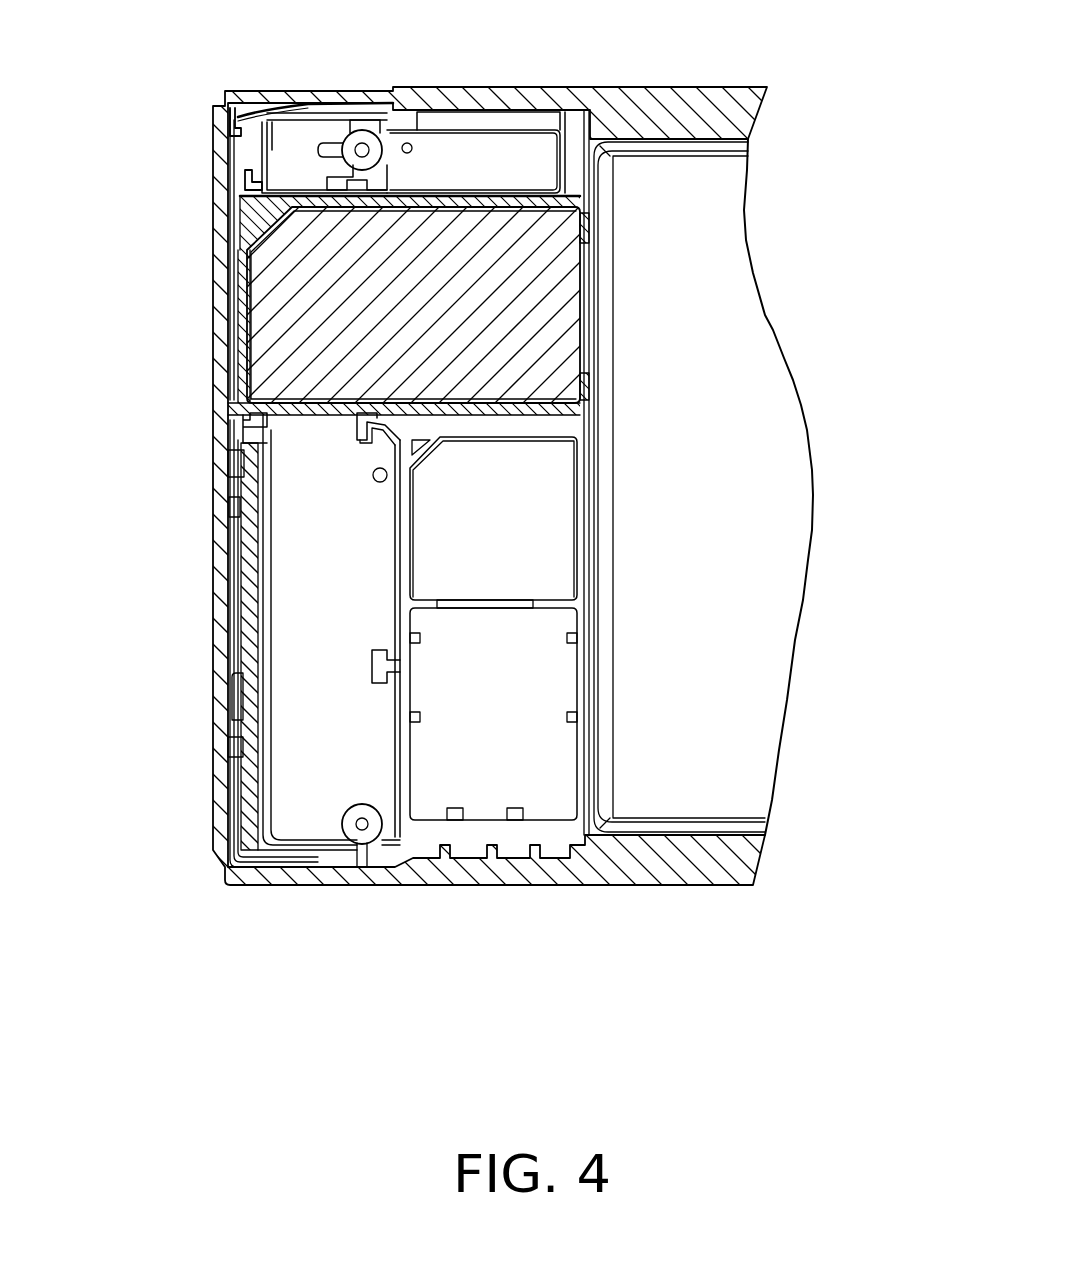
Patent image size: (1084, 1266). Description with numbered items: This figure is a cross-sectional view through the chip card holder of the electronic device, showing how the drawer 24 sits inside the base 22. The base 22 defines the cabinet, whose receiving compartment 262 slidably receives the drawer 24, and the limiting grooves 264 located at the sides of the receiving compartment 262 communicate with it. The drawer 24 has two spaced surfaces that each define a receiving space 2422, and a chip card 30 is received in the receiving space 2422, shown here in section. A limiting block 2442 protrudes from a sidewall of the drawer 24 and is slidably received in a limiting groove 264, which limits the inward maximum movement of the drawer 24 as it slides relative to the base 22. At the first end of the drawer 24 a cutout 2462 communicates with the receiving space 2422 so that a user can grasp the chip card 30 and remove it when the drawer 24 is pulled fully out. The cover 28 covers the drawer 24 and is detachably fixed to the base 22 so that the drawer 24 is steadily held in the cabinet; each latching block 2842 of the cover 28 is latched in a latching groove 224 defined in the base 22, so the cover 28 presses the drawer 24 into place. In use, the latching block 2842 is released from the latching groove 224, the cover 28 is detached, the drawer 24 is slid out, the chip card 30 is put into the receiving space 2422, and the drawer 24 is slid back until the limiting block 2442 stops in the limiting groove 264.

The base 22 is at (622, 123).
The latching groove 224 is at (335, 100).
The drawer 24 is at (257, 201).
The receiving space 2422 is at (493, 196).
The limiting block 2442 is at (233, 188).
The cutout 2462 is at (583, 318).
The receiving compartment 262 is at (357, 414).
The limiting groove 264 is at (228, 181).
The cover 28 is at (225, 533).
The latching block 2842 is at (328, 104).
The chip card 30 is at (295, 355).